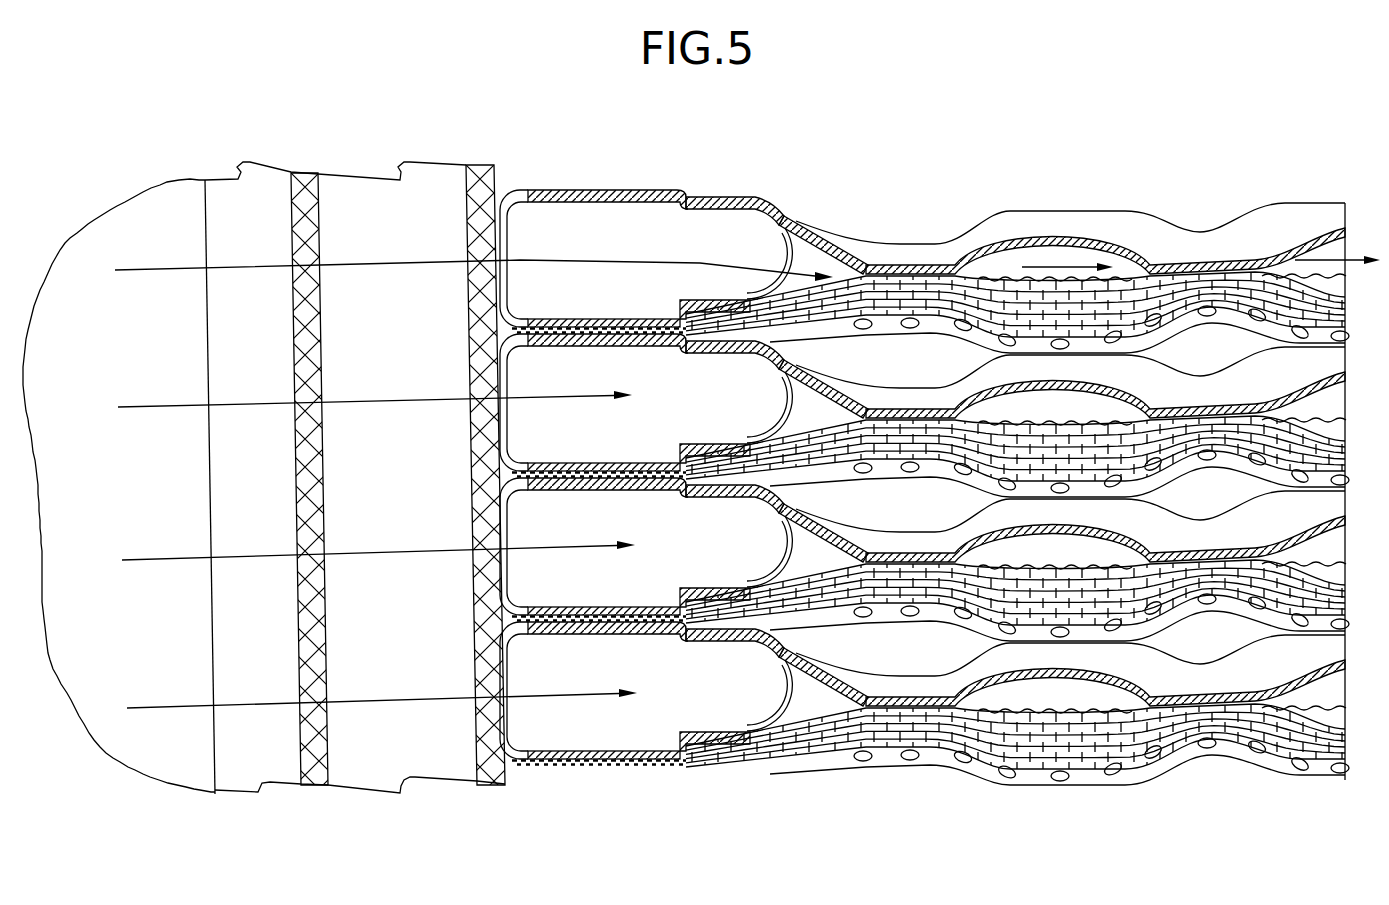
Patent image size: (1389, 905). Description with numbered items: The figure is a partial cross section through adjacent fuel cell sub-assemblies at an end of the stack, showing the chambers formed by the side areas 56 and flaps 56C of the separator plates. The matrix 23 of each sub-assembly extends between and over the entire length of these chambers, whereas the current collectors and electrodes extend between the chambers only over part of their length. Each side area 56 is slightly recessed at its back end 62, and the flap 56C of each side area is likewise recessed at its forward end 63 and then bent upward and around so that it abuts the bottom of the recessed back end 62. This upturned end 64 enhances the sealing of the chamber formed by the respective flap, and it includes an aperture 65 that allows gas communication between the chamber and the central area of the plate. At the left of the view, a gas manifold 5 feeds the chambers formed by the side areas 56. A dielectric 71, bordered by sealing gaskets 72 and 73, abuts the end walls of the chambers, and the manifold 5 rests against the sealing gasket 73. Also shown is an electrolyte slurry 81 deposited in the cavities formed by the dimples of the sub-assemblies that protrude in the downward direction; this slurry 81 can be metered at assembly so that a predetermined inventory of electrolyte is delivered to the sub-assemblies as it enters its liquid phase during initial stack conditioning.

The gas manifold 5 is at (214, 794).
The dielectric 71 is at (386, 796).
The sealing gasket 72 is at (483, 790).
The sealing gasket 73 is at (312, 790).
The side area 56 is at (617, 189).
The flap 56C is at (550, 323).
The recessed back end 62 is at (739, 197).
The recessed forward end 63 is at (788, 262).
The aperture 65 is at (772, 292).
The upturned end 64 is at (690, 352).
The matrix 23 is at (650, 323).
The electrolyte slurry 81 is at (1045, 715).